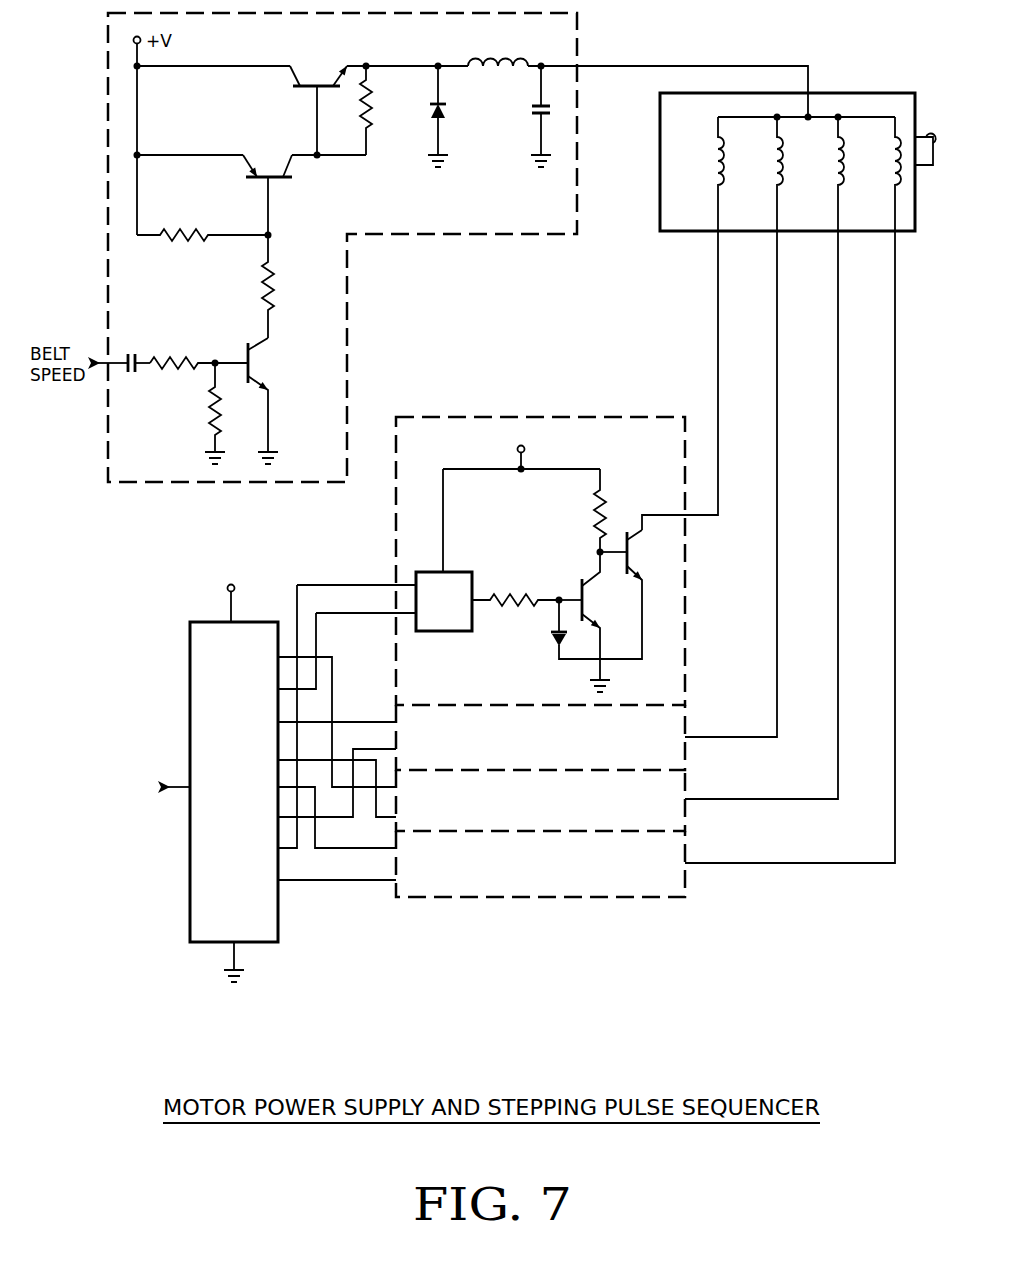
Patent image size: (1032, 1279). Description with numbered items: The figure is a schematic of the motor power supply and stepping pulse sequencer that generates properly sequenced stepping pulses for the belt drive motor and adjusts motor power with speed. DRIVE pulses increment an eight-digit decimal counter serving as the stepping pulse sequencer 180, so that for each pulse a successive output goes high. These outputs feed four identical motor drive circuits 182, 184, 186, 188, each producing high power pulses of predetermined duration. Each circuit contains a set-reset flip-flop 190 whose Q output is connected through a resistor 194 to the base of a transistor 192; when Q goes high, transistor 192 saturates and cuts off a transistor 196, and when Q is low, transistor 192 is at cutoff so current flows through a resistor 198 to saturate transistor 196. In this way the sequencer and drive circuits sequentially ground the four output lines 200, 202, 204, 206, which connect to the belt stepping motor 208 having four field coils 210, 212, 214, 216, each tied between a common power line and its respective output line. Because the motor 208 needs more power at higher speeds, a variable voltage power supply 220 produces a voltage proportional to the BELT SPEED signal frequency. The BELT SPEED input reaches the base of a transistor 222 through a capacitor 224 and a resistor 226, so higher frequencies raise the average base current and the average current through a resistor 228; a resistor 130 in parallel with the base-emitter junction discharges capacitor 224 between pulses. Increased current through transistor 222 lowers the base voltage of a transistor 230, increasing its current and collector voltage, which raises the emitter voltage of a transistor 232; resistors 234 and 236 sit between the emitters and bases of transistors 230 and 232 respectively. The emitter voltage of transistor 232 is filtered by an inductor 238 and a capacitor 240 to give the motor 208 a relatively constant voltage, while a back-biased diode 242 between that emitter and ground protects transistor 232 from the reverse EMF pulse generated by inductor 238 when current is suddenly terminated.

The resistor 130 is at (207, 417).
The stepping pulse sequencer 180 is at (190, 902).
The motor drive circuit 182 is at (522, 561).
The motor drive circuit 184 is at (687, 755).
The motor drive circuit 186 is at (687, 818).
The motor drive circuit 188 is at (687, 880).
The set-reset flip-flop 190 is at (456, 572).
The transistor 192 is at (578, 582).
The resistor 194 is at (506, 600).
The transistor 196 is at (632, 536).
The resistor 198 is at (594, 513).
The output line 200 is at (718, 314).
The output line 202 is at (777, 288).
The output line 204 is at (838, 288).
The output line 206 is at (895, 288).
The belt stepping motor 208 is at (856, 92).
The field coil 210 is at (713, 180).
The field coil 212 is at (772, 180).
The field coil 214 is at (832, 180).
The field coil 216 is at (890, 180).
The variable voltage power supply 220 is at (348, 368).
The transistor 222 is at (268, 346).
The capacitor 224 is at (136, 353).
The resistor 226 is at (194, 353).
The resistor 228 is at (276, 290).
The transistor 230 is at (290, 180).
The transistor 232 is at (302, 92).
The resistor 234 is at (172, 247).
The resistor 236 is at (366, 117).
The inductor 238 is at (496, 50).
The capacitor 240 is at (538, 110).
The back-biased diode 242 is at (446, 106).